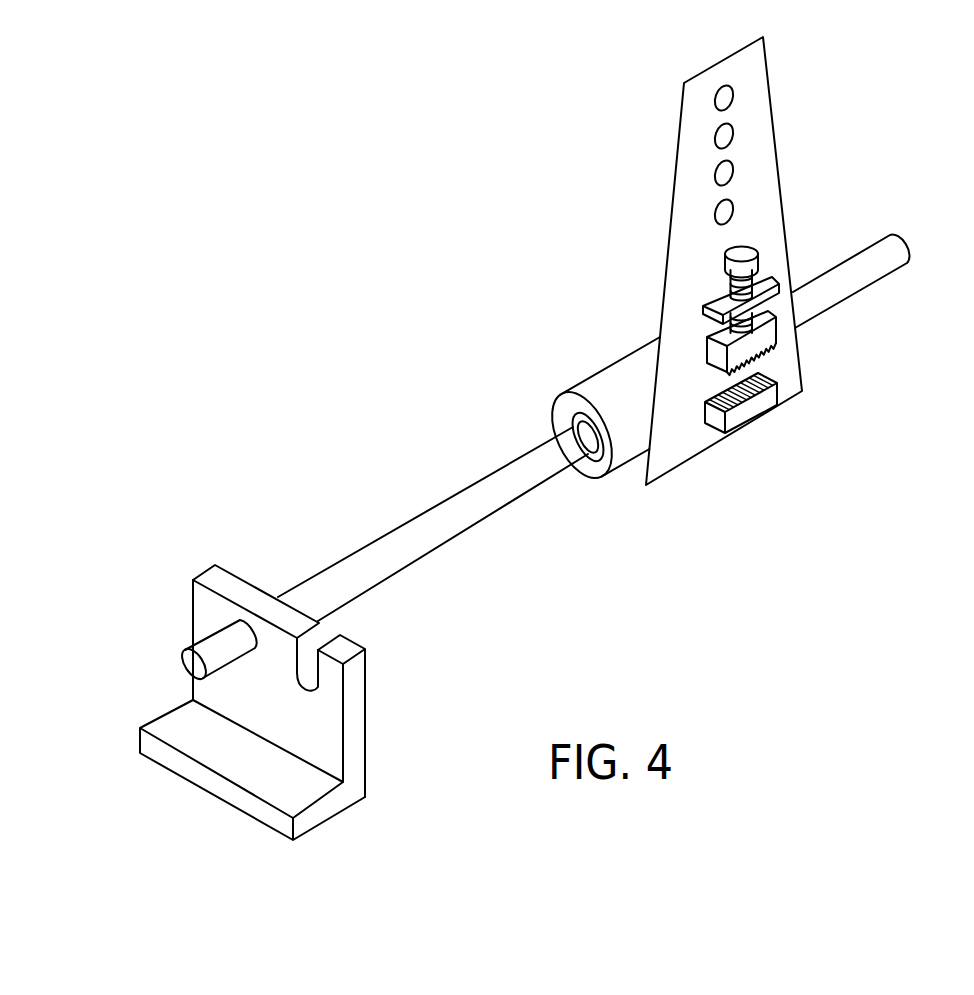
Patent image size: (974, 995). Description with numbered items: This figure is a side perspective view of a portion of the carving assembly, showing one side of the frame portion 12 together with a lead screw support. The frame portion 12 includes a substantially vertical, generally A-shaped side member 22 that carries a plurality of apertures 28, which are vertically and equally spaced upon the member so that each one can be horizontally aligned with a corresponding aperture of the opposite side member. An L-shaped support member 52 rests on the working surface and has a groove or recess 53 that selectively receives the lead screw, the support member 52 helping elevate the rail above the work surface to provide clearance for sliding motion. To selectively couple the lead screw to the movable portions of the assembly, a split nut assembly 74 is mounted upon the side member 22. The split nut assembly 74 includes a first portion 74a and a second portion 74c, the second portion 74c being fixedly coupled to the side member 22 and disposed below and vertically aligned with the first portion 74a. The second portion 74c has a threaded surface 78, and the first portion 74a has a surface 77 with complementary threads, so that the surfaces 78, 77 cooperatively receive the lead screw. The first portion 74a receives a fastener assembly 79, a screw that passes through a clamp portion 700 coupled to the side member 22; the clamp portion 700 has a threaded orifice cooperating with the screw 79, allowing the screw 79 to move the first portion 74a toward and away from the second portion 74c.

The frame portion 12 is at (728, 283).
The side member 22 is at (776, 132).
The apertures 28 is at (721, 141).
The L-shaped support member 52 is at (238, 796).
The recess 53 is at (320, 692).
The split nut assembly 74 is at (724, 366).
The first portion 74a is at (713, 338).
The second portion 74c is at (766, 395).
The threaded surface 77 is at (778, 344).
The threaded surface 78 is at (707, 393).
The fastener assembly 79 is at (728, 283).
The clamp portion 700 is at (763, 278).